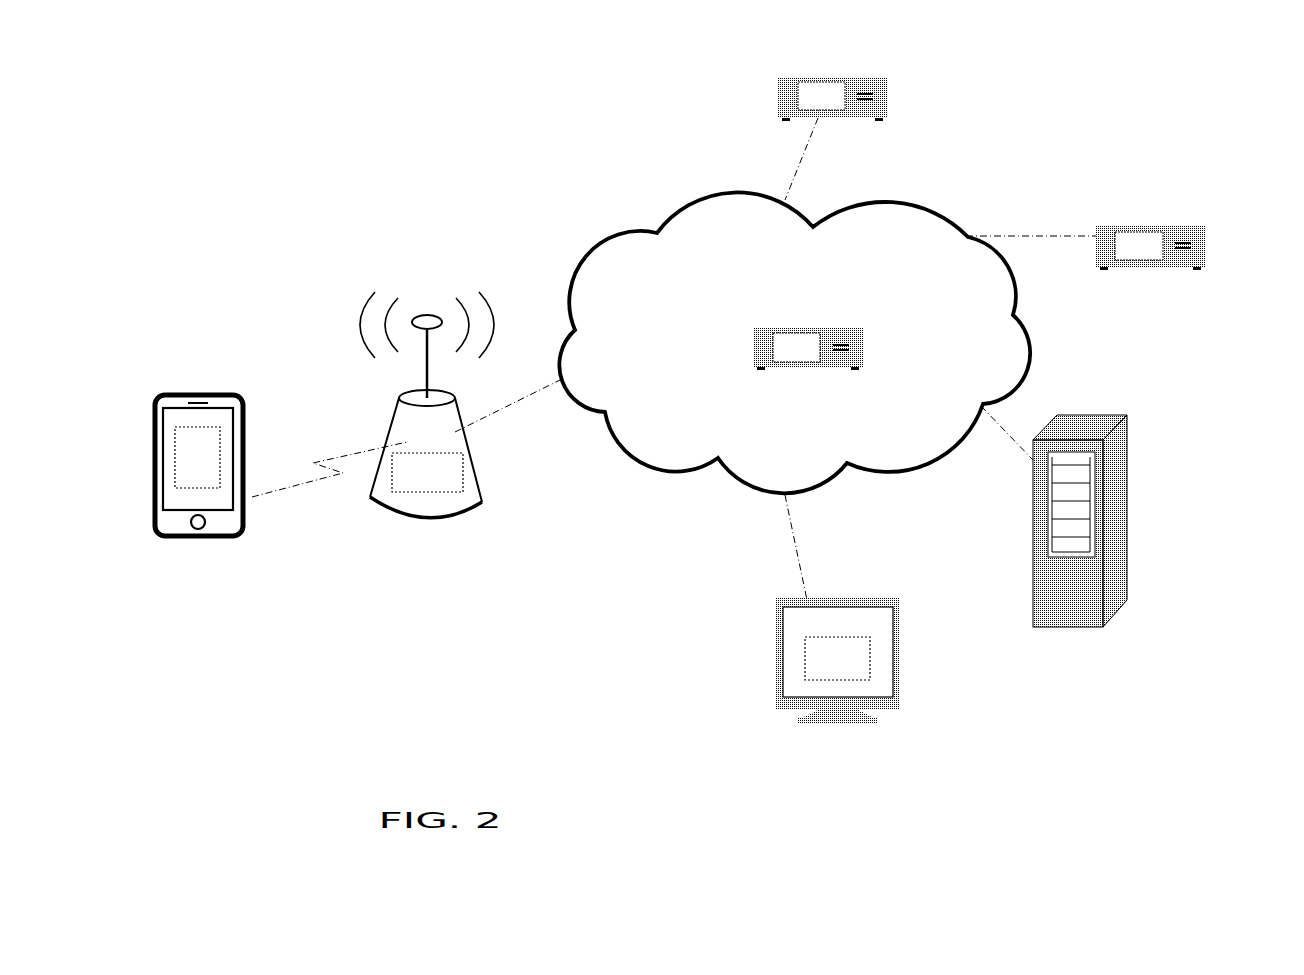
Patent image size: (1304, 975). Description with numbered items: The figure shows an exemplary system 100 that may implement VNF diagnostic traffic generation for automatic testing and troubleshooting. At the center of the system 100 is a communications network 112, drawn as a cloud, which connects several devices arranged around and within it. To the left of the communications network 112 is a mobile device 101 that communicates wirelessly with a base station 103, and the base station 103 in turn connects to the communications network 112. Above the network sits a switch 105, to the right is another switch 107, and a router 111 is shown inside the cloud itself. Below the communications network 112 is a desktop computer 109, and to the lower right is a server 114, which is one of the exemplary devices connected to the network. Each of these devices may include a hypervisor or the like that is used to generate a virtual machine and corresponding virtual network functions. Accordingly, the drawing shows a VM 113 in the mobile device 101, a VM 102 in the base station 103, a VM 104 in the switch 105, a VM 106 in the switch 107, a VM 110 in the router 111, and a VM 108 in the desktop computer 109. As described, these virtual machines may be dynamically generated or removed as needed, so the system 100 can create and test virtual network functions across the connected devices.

The system 100 is at (272, 165).
The mobile device 101 is at (227, 538).
The VM 102 is at (467, 475).
The base station 103 is at (372, 498).
The VM 104 is at (823, 77).
The switch 105 is at (862, 77).
The VM 106 is at (1142, 225).
The switch 107 is at (1180, 225).
The VM 108 is at (775, 622).
The desktop computer 109 is at (870, 653).
The VM 110 is at (865, 357).
The router 111 is at (757, 327).
The communications network 112 is at (683, 204).
The VM 113 is at (220, 437).
The server 114 is at (1082, 420).